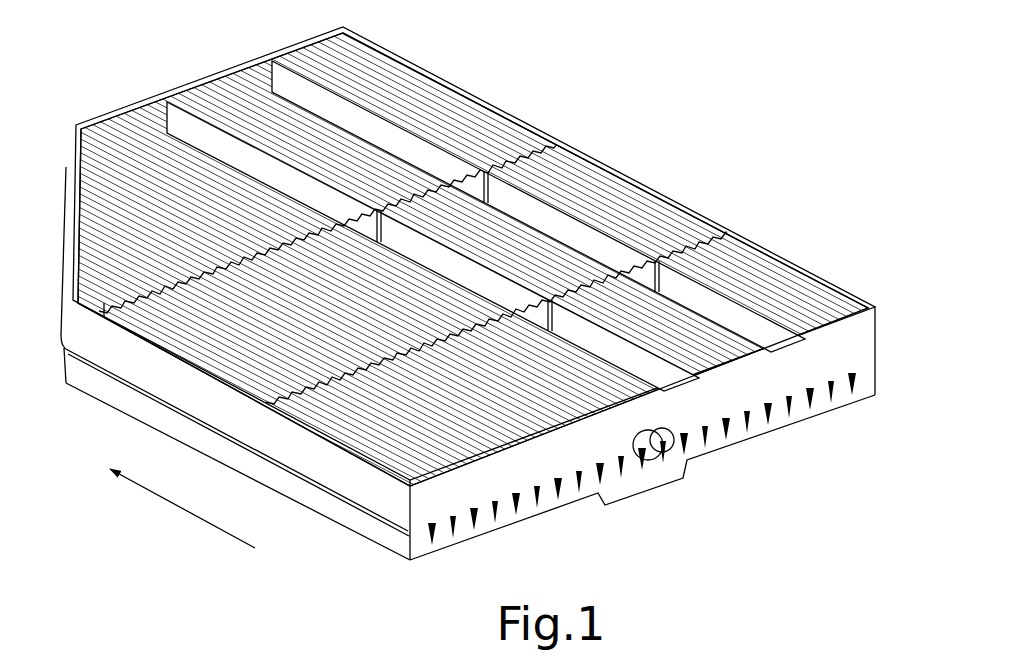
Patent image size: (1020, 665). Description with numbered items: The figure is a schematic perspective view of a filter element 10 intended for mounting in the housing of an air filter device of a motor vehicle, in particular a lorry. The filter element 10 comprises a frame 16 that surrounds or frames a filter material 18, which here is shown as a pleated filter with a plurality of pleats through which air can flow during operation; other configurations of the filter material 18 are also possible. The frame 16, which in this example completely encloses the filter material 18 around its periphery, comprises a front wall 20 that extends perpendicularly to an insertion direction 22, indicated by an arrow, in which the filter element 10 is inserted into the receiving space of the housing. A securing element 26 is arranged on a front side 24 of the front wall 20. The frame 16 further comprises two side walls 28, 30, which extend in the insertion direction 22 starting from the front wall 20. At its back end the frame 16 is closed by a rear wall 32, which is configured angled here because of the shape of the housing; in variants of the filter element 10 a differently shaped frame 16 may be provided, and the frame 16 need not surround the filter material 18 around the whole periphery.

The filter element 10 is at (658, 144).
The frame 16 is at (771, 240).
The filter material 18 is at (447, 163).
The front wall 20 is at (782, 384).
The insertion direction 22 is at (174, 502).
The front side 24 is at (508, 502).
The securing element 26 is at (669, 425).
The side wall 28 is at (683, 207).
The side wall 30 is at (368, 480).
The rear wall 32 is at (260, 75).